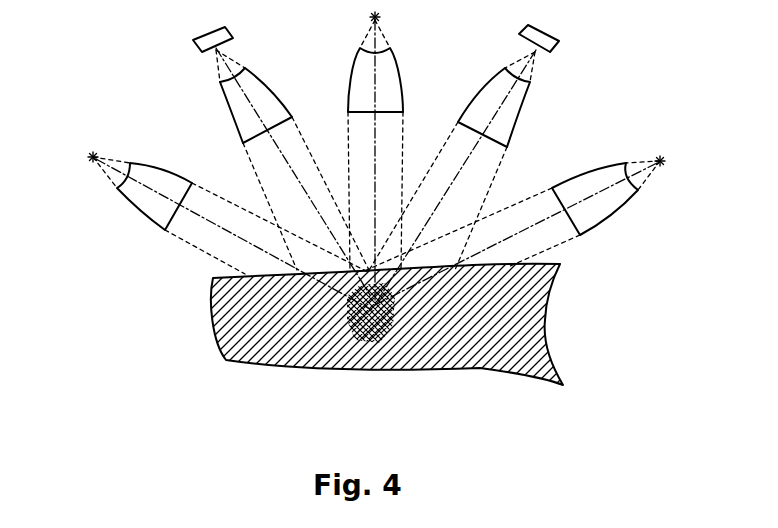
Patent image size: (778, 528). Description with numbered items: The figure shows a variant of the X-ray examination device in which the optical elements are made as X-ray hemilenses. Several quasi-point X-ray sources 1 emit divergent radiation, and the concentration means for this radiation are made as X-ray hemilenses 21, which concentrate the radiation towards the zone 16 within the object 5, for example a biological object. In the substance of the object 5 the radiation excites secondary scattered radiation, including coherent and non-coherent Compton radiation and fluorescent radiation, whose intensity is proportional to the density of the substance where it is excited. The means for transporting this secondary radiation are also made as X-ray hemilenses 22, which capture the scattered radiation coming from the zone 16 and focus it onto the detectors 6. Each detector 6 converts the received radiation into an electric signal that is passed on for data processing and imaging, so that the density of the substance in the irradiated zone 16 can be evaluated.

The X-ray source 1 is at (90, 162).
The object 5 is at (215, 297).
The detector 6 is at (192, 42).
The zone 16 is at (347, 330).
The X-ray hemilens 21 is at (147, 203).
The X-ray hemilens 22 is at (232, 109).